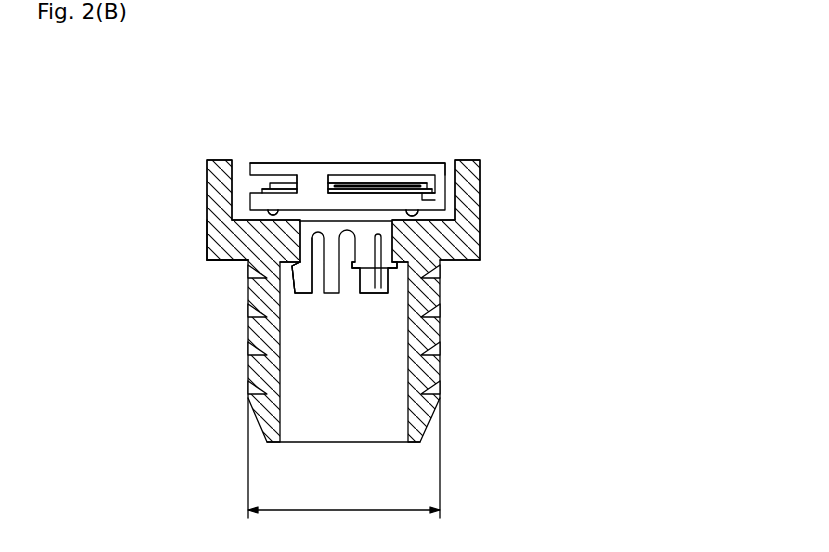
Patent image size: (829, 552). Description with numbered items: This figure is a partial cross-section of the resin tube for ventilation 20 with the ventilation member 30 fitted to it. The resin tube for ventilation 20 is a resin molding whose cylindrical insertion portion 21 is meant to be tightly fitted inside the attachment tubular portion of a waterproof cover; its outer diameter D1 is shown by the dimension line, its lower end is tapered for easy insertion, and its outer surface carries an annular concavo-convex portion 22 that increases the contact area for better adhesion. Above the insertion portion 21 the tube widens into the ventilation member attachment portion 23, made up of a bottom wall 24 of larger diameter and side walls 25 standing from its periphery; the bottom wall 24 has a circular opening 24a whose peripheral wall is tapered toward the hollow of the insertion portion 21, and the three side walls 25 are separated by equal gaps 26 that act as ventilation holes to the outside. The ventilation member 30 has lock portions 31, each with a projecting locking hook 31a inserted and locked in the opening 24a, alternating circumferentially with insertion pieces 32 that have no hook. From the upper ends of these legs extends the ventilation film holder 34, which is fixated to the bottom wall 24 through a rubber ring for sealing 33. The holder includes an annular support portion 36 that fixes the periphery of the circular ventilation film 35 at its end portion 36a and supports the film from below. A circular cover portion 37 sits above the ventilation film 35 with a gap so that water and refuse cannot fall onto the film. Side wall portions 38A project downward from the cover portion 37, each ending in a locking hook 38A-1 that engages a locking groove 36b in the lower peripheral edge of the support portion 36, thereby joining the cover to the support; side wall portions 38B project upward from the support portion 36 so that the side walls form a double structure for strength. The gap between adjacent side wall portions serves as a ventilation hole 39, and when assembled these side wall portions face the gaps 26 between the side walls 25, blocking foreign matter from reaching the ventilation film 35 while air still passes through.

The resin tube for ventilation 20 is at (514, 295).
The insertion portion 21 is at (462, 358).
The annular concavo-convex portion 22 is at (253, 387).
The ventilation member attachment portion 23 is at (510, 208).
The bottom wall 24 is at (455, 247).
The circular opening 24a is at (228, 262).
The side wall 25 is at (222, 172).
The gap 26 is at (472, 161).
The ventilation member 30 is at (330, 152).
The lock portion 31 is at (400, 310).
The locking hook 31a is at (398, 289).
The insertion piece 32 is at (330, 295).
The rubber ring for sealing 33 is at (250, 228).
The ventilation film holder 34 is at (292, 158).
The ventilation film 35 is at (390, 167).
The annular support portion 36 is at (265, 206).
The end portion 36a is at (413, 167).
The locking groove 36b is at (455, 231).
The cover portion 37 is at (343, 167).
The side wall portion 38A is at (318, 167).
The locking hook 38A-1 is at (432, 200).
The side wall portion 38B is at (270, 167).
The ventilation hole 39 is at (367, 167).